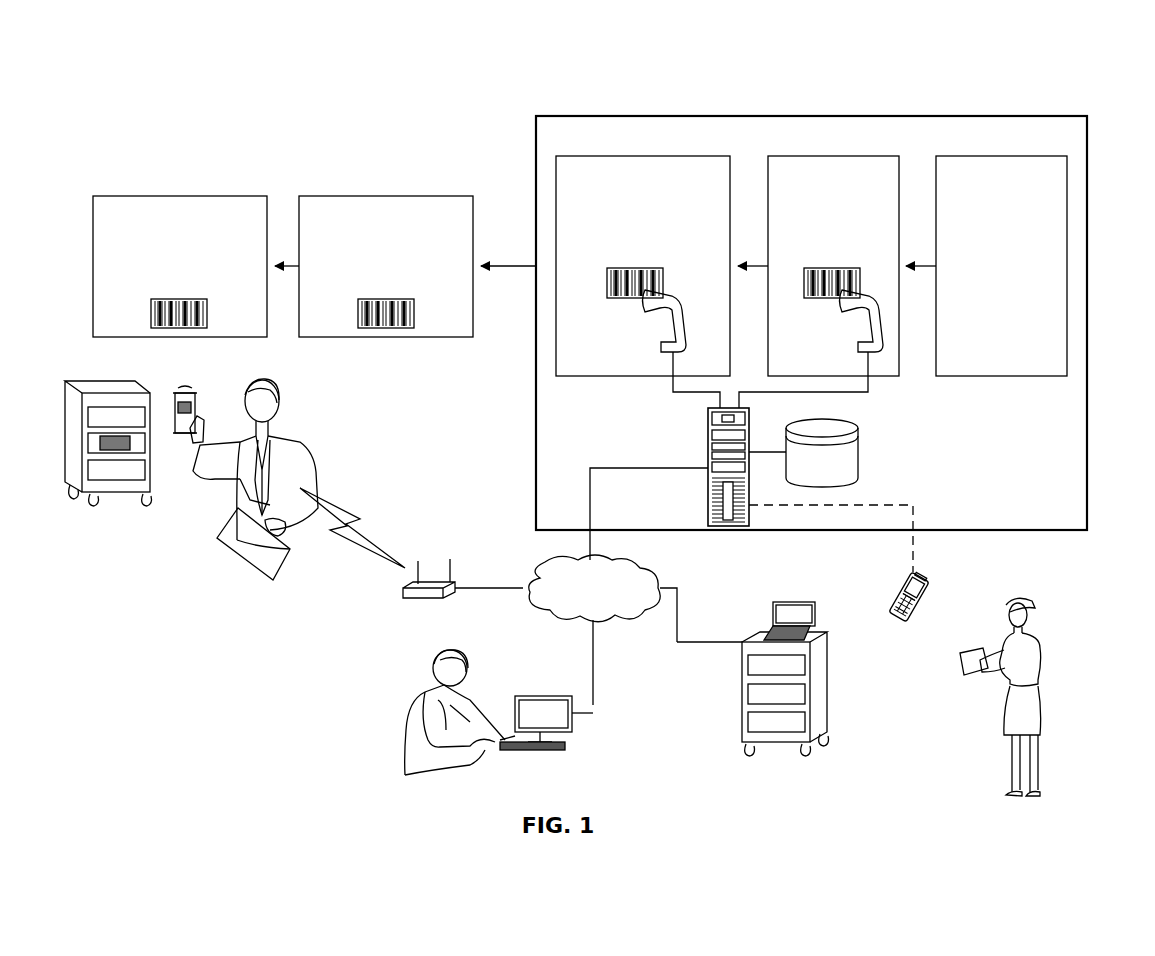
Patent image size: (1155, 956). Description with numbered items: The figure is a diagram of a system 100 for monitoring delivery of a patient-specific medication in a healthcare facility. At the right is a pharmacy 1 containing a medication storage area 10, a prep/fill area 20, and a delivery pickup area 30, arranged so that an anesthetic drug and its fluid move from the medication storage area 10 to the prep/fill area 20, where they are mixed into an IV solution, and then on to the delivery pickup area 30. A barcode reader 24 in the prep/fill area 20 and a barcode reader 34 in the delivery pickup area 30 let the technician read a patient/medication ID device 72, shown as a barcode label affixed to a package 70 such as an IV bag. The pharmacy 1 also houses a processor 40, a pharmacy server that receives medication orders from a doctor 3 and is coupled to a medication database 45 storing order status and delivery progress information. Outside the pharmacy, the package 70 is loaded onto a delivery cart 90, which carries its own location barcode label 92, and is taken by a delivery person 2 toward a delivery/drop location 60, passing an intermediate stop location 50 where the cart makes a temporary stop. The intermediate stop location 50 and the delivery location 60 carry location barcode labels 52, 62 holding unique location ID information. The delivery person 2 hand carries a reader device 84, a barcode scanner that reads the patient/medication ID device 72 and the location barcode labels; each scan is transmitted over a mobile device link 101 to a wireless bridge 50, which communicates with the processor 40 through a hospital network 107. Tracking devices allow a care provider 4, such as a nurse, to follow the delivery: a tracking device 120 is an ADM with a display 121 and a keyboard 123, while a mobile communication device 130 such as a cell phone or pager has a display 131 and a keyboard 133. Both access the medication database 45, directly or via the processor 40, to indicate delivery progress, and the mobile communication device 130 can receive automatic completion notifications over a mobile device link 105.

The system 100 is at (66, 123).
The pharmacy 1 is at (1061, 115).
The medication storage area 10 is at (1033, 156).
The prep/fill area 20 is at (857, 156).
The delivery pickup area 30 is at (699, 156).
The barcode reader 24 is at (855, 319).
The barcode reader 34 is at (657, 319).
The processor 40 is at (700, 426).
The medication database 45 is at (860, 451).
The mobile device link 105 is at (892, 505).
The intermediate stop location / wireless bridge 50 is at (324, 195).
The location barcode label 52 is at (357, 318).
The delivery/drop location 60 is at (118, 195).
The location barcode label 62 is at (150, 318).
The package 70 is at (190, 382).
The patient/medication ID device 72 is at (192, 406).
The delivery person 2 is at (288, 404).
The reader device 84 is at (277, 570).
The delivery cart 90 is at (72, 413).
The location barcode label 92 is at (99, 444).
The mobile device link 101 is at (348, 512).
The hospital network 107 is at (623, 562).
The doctor 3 is at (413, 664).
The tracking device 120 is at (737, 718).
The display 121 is at (788, 603).
The keyboard 123 is at (763, 632).
The mobile communication device 130 is at (937, 572).
The display 131 is at (905, 577).
The keyboard 133 is at (890, 610).
The care provider 4 is at (1058, 760).